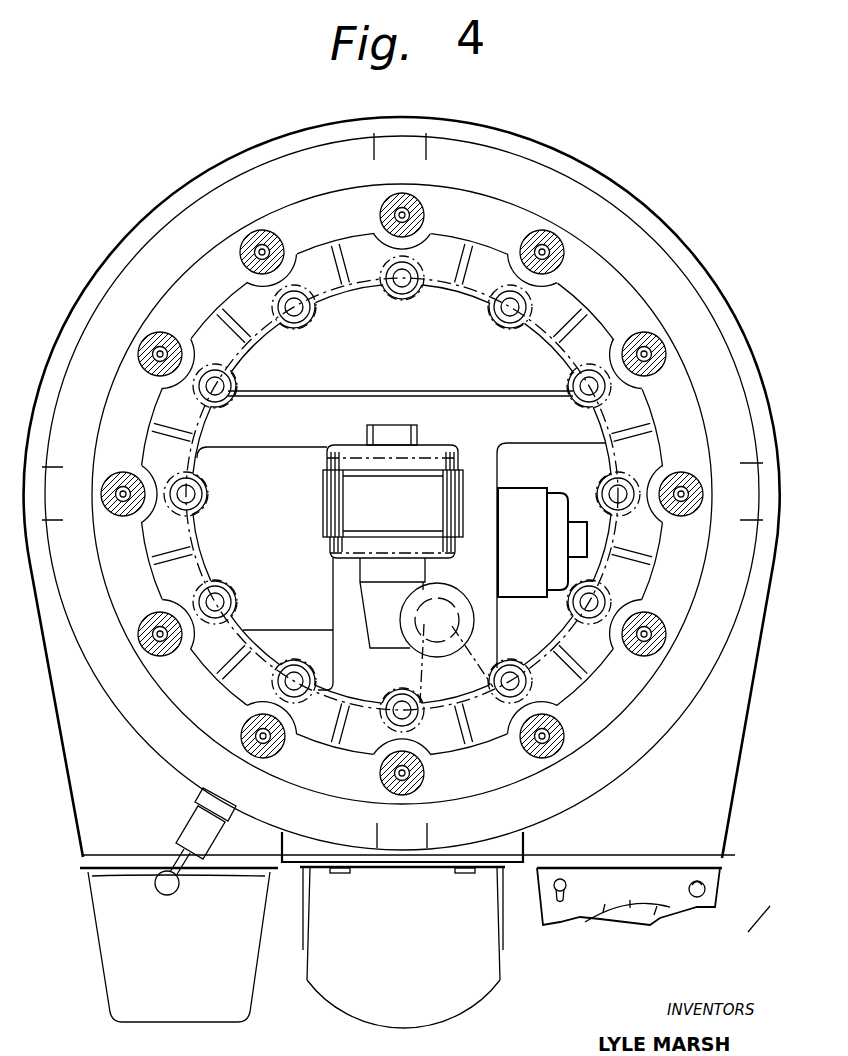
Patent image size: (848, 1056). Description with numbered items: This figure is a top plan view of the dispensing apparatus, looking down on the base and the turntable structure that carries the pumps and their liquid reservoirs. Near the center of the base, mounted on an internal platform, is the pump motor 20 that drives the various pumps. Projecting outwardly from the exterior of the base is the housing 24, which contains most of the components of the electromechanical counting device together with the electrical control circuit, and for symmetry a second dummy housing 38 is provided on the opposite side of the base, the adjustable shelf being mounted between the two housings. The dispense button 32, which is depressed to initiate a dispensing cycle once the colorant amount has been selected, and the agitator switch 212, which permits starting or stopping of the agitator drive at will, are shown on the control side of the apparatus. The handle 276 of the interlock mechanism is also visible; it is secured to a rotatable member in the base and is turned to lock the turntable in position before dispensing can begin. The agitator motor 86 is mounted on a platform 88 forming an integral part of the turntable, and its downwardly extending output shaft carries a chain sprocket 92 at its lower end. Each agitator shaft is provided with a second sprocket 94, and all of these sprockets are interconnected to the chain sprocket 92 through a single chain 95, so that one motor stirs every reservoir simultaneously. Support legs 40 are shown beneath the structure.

The pump motor 20 is at (562, 497).
The housing 24 is at (716, 862).
The dispense button 32 is at (706, 890).
The dummy housing 38 is at (216, 1017).
The support leg 40 is at (340, 873).
The agitator motor 86 is at (435, 450).
The platform 88 is at (306, 398).
The chain sprocket 92 is at (445, 593).
The second sprocket 94 is at (400, 295).
The chain 95 is at (424, 684).
The agitator switch 212 is at (562, 885).
The handle 276 is at (176, 889).